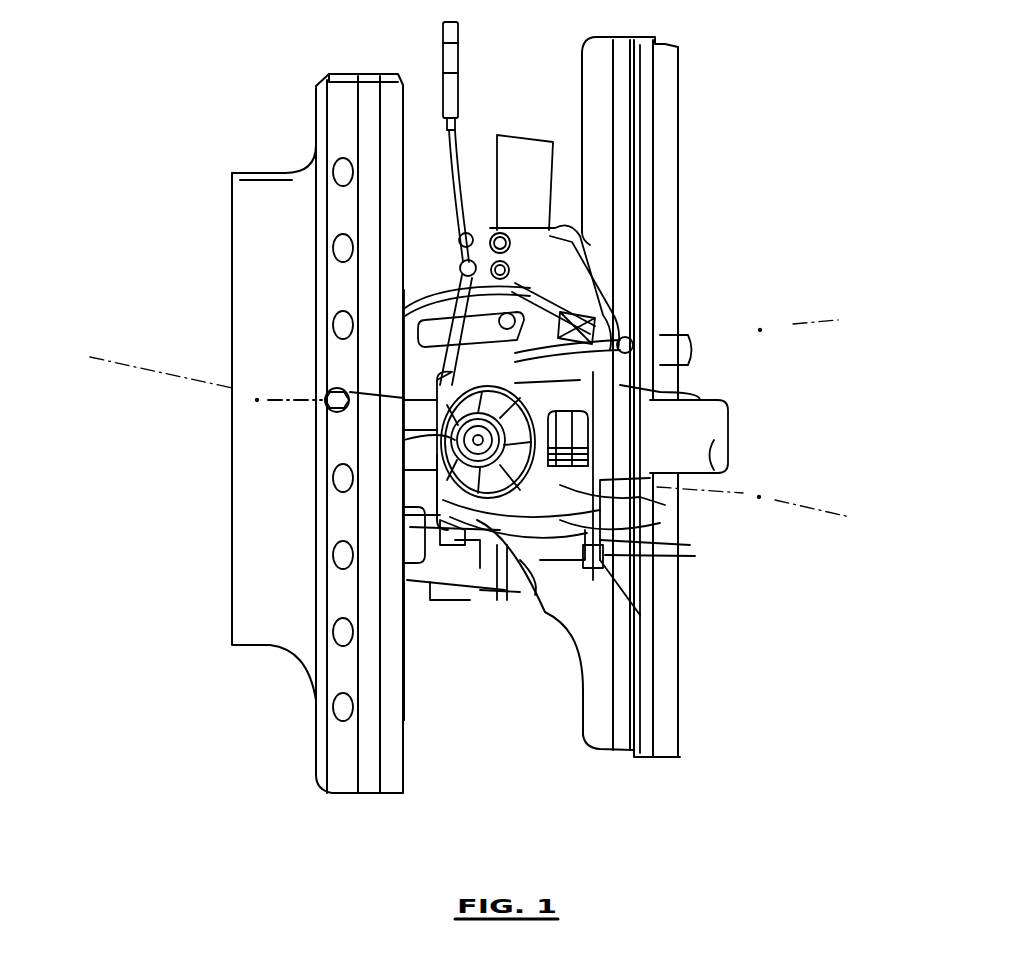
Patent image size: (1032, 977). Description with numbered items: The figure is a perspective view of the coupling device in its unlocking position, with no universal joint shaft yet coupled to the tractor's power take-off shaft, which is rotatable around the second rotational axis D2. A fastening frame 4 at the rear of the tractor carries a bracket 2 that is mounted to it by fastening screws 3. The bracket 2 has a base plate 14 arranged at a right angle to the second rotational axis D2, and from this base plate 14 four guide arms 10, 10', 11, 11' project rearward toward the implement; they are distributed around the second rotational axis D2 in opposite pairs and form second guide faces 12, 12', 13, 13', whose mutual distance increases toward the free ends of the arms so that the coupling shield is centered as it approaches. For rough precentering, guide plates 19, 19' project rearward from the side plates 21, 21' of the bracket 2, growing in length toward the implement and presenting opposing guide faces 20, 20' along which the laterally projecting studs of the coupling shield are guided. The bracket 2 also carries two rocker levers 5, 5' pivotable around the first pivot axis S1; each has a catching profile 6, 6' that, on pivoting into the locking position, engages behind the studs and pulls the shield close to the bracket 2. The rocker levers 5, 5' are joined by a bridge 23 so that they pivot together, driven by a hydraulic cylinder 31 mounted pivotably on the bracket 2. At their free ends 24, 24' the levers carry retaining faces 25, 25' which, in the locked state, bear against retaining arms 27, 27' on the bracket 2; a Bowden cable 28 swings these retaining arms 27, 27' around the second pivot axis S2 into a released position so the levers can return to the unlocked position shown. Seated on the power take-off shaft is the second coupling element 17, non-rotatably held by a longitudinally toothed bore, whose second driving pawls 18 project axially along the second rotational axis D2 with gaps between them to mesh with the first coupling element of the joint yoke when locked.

The bracket 2 is at (590, 252).
The fastening screws 3 is at (322, 412).
The fastening frame 4 is at (668, 95).
The rocker lever 5 is at (658, 566).
The rocker lever 5' is at (468, 598).
The catching profile 6 is at (653, 513).
The catching profile 6' is at (508, 599).
The guide arm 10 is at (689, 338).
The guide arm 10' is at (361, 539).
The guide arm 11 is at (670, 594).
The guide arm 11' is at (399, 405).
The second guide face 12 is at (627, 352).
The second guide face 12' is at (521, 578).
The second guide face 13 is at (570, 578).
The second guide face 13' is at (388, 405).
The base plate 14 is at (414, 292).
The second coupling element 17 is at (518, 292).
The second driving pawls 18 is at (565, 268).
The guide plate 19 is at (720, 436).
The guide plate 19' is at (349, 520).
The guide face 20 is at (695, 505).
The guide face 20' is at (356, 492).
The side plate 21 is at (625, 304).
The side plate 21' is at (318, 454).
The bridge 23 is at (440, 585).
The free end 24 is at (700, 545).
The free end 24' is at (527, 631).
The retaining face 25 is at (725, 565).
The retaining face 25' is at (495, 648).
The retaining arm 27 is at (650, 420).
The retaining arm 27' is at (322, 383).
The Bowden cable 28 is at (462, 36).
The hydraulic cylinder 31 is at (551, 232).
The first pivot axis S1 is at (282, 566).
The second pivot axis S2 is at (232, 407).
The second rotational axis D2 is at (822, 514).